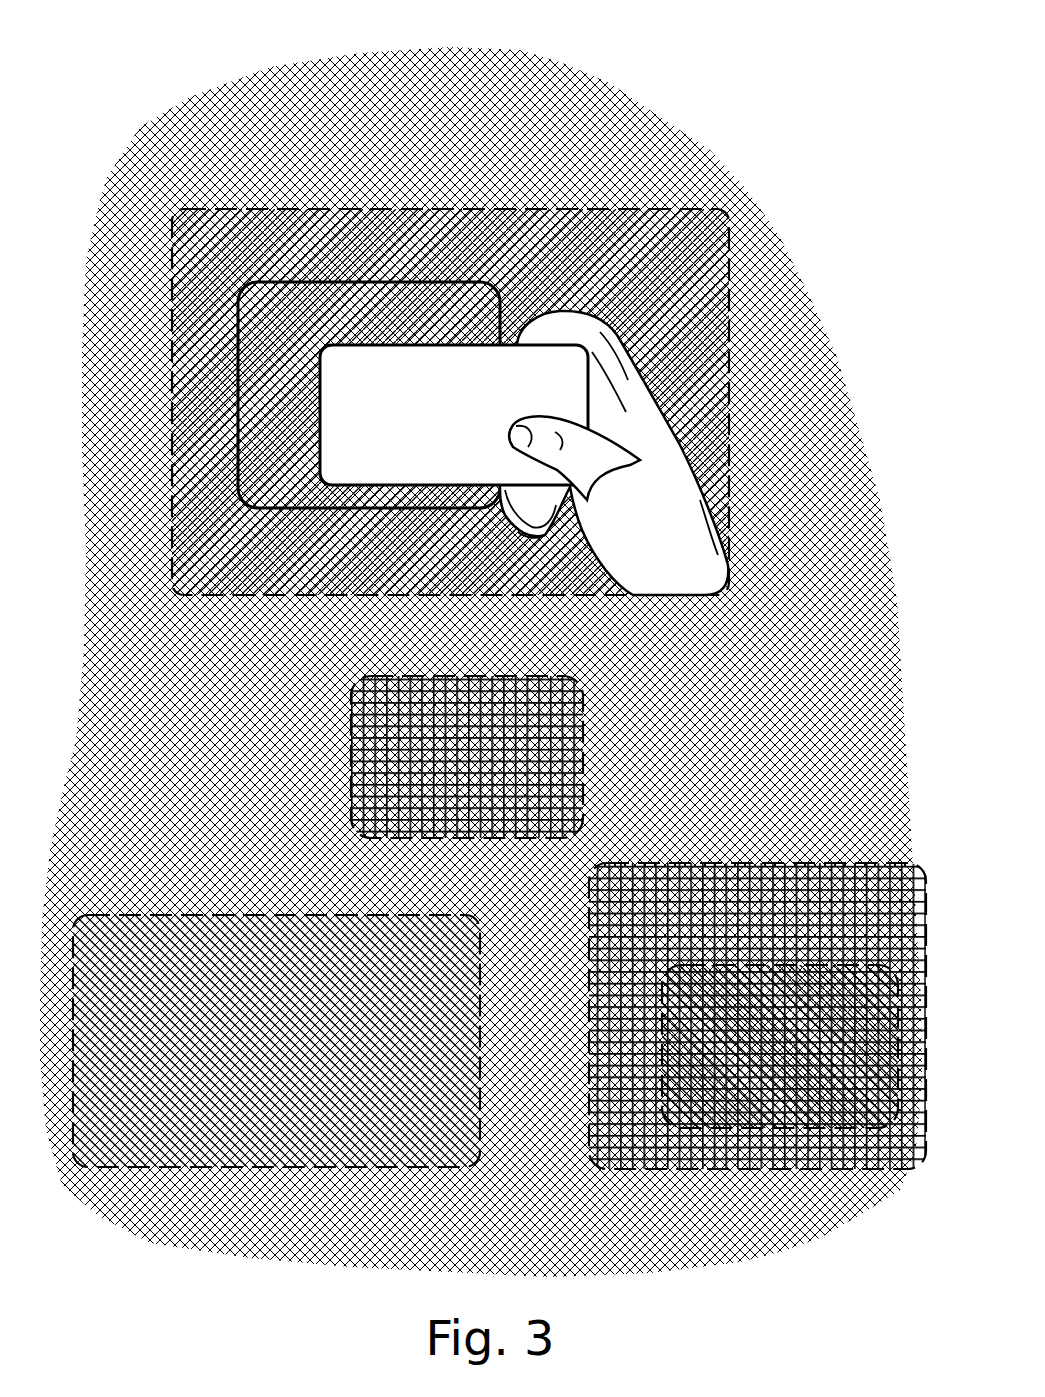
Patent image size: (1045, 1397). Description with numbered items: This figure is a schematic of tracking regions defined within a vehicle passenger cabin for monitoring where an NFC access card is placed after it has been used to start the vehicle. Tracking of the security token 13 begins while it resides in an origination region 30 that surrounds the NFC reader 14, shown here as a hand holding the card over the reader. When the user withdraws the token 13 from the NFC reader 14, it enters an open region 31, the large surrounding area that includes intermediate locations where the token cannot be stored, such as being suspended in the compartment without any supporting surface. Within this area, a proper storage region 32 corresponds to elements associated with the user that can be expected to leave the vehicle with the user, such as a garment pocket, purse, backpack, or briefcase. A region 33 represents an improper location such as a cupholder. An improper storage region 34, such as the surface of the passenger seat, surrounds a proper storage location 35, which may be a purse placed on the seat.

The security token 13 is at (345, 412).
The NFC reader 14 is at (312, 280).
The origination region 30 is at (172, 260).
The open region 31 is at (130, 662).
The proper storage region 32 is at (130, 1168).
The improper location region 33 is at (351, 740).
The improper storage region 34 is at (922, 872).
The proper storage location 35 is at (826, 1112).